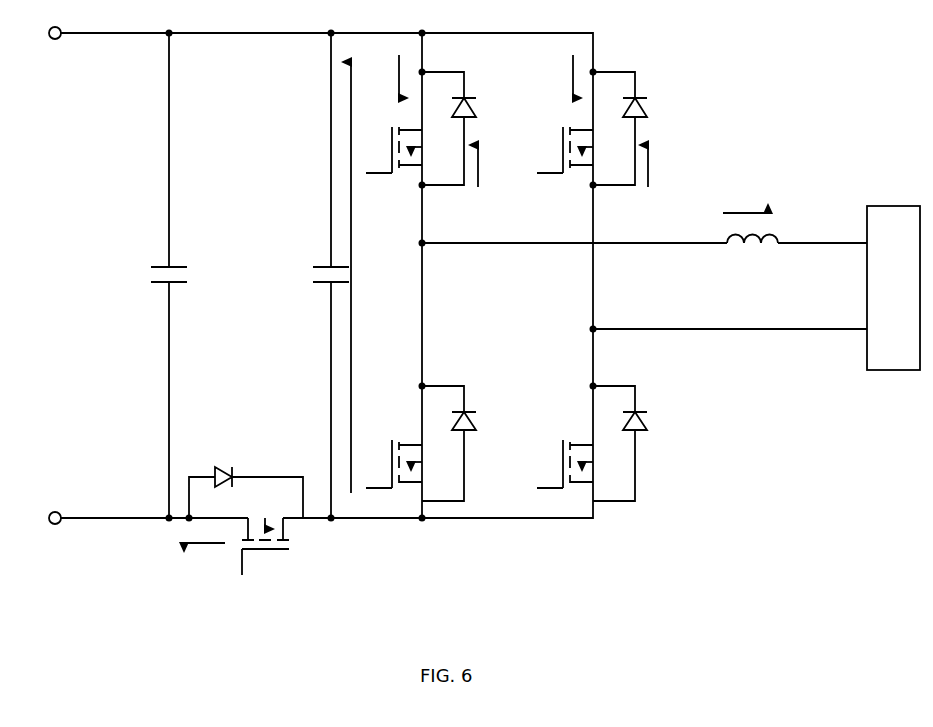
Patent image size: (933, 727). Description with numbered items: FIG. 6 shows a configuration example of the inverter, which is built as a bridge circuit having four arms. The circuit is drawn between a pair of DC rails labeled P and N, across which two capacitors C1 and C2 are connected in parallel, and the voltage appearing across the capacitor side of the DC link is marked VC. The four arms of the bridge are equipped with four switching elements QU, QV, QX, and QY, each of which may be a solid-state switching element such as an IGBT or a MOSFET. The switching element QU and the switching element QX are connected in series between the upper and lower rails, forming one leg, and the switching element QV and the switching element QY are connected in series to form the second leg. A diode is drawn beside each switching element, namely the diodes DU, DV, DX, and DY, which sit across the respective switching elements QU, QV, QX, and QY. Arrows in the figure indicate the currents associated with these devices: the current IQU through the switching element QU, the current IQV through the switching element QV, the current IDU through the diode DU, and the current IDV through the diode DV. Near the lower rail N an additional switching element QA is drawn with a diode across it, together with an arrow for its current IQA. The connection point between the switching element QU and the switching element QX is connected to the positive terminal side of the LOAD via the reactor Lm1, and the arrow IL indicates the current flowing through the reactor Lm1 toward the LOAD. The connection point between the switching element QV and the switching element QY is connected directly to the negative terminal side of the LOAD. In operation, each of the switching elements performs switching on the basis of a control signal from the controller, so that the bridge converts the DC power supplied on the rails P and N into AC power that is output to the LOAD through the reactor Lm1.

The positive DC terminal P is at (29, 34).
The negative DC terminal N is at (30, 519).
The first capacitor C1 is at (152, 275).
The second capacitor C2 is at (316, 275).
The capacitor voltage VC is at (368, 277).
The switching element QU is at (391, 150).
The switching element QV is at (562, 150).
The switching element QX is at (391, 464).
The switching element QY is at (562, 464).
The switching element A QA is at (246, 530).
The diode U DU is at (464, 128).
The diode V DV is at (637, 128).
The diode X DX is at (463, 443).
The diode Y DY is at (634, 443).
The current through QU IQU is at (380, 76).
The current through QV IQV is at (554, 76).
The current through DU IDU is at (496, 166).
The current through DV IDV is at (667, 166).
The current through QA IQA is at (204, 567).
The load current IL is at (745, 200).
The reactor Lm1 is at (752, 258).
The load LOAD is at (893, 288).